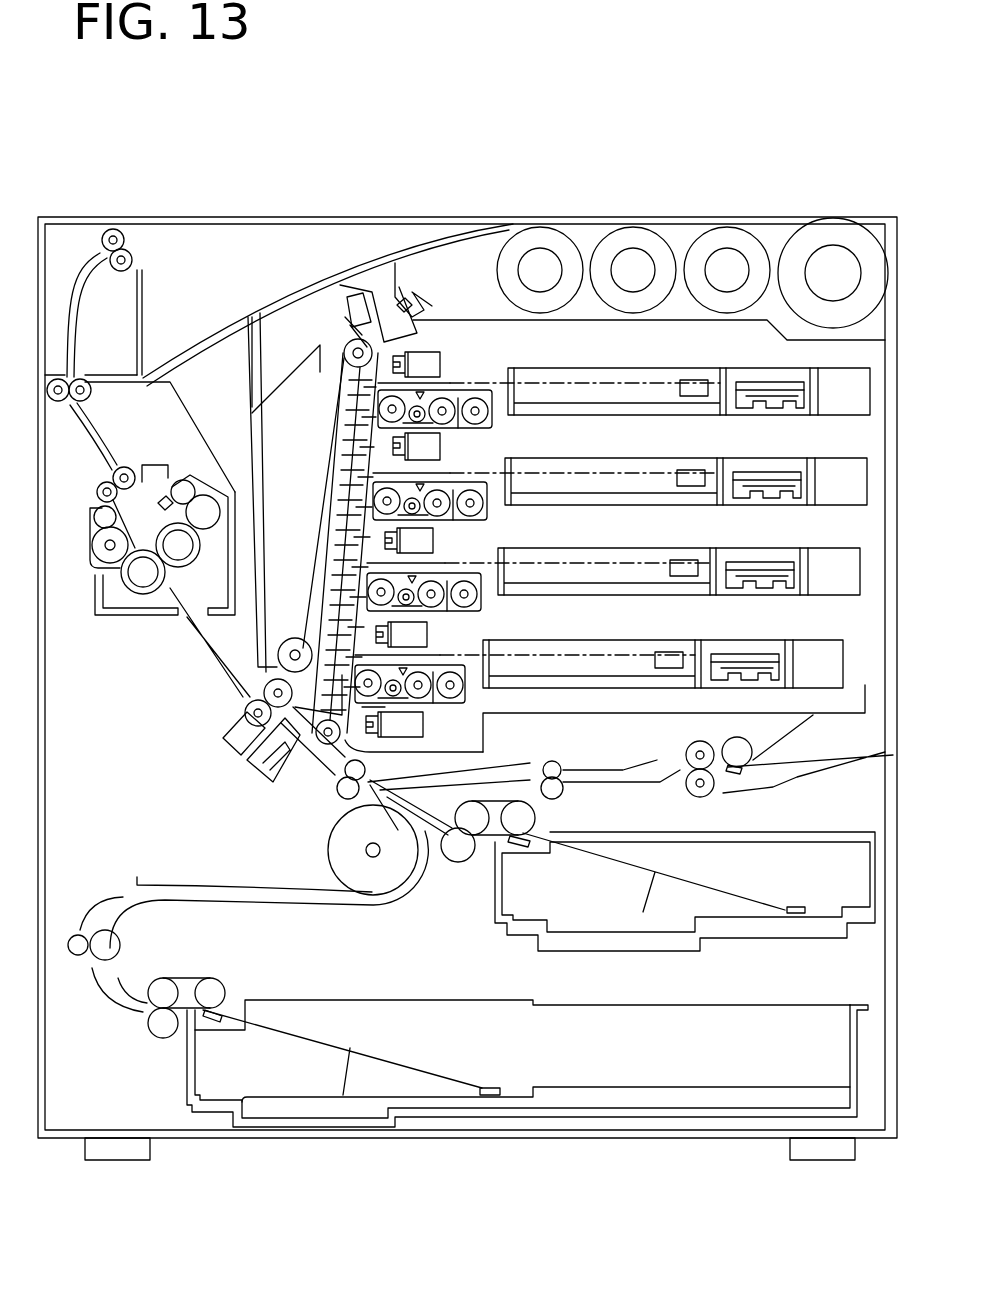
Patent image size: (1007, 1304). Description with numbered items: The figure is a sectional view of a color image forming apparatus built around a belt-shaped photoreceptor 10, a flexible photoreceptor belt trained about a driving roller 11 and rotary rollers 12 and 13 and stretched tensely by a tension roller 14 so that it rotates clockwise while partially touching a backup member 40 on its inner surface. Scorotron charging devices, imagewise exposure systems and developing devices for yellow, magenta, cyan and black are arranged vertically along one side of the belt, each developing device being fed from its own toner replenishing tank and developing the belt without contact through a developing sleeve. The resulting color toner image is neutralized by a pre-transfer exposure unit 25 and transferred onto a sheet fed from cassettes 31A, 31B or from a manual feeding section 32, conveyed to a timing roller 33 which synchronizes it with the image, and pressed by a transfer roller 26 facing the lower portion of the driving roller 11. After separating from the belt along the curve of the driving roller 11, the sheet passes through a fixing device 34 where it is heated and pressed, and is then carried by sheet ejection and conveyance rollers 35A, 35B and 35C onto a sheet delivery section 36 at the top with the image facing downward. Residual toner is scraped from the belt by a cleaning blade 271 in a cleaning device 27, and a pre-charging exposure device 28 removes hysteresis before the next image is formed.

The belt-shaped photoreceptor 10 is at (335, 590).
The driving roller 11 is at (263, 684).
The rotary roller 12 is at (350, 349).
The rotary roller 13 is at (243, 745).
The tension roller 14 is at (276, 661).
The pre-transfer exposure unit 25 is at (340, 776).
The transfer roller 26 is at (245, 716).
The cleaning device 27 is at (390, 282).
The cleaning blade 271 is at (360, 292).
The pre-charging exposure device 28 is at (437, 268).
The cassette 31A is at (832, 850).
The cassette 31B is at (692, 1028).
The manual feeding section 32 is at (797, 743).
The timing roller 33 is at (366, 773).
The fixing device 34 is at (140, 573).
The sheet ejection and conveyance roller 35A is at (125, 467).
The sheet ejection and conveyance roller 35B is at (85, 376).
The sheet ejection and conveyance roller 35C is at (133, 258).
The sheet delivery section 36 is at (220, 326).
The backup member 40 is at (345, 405).